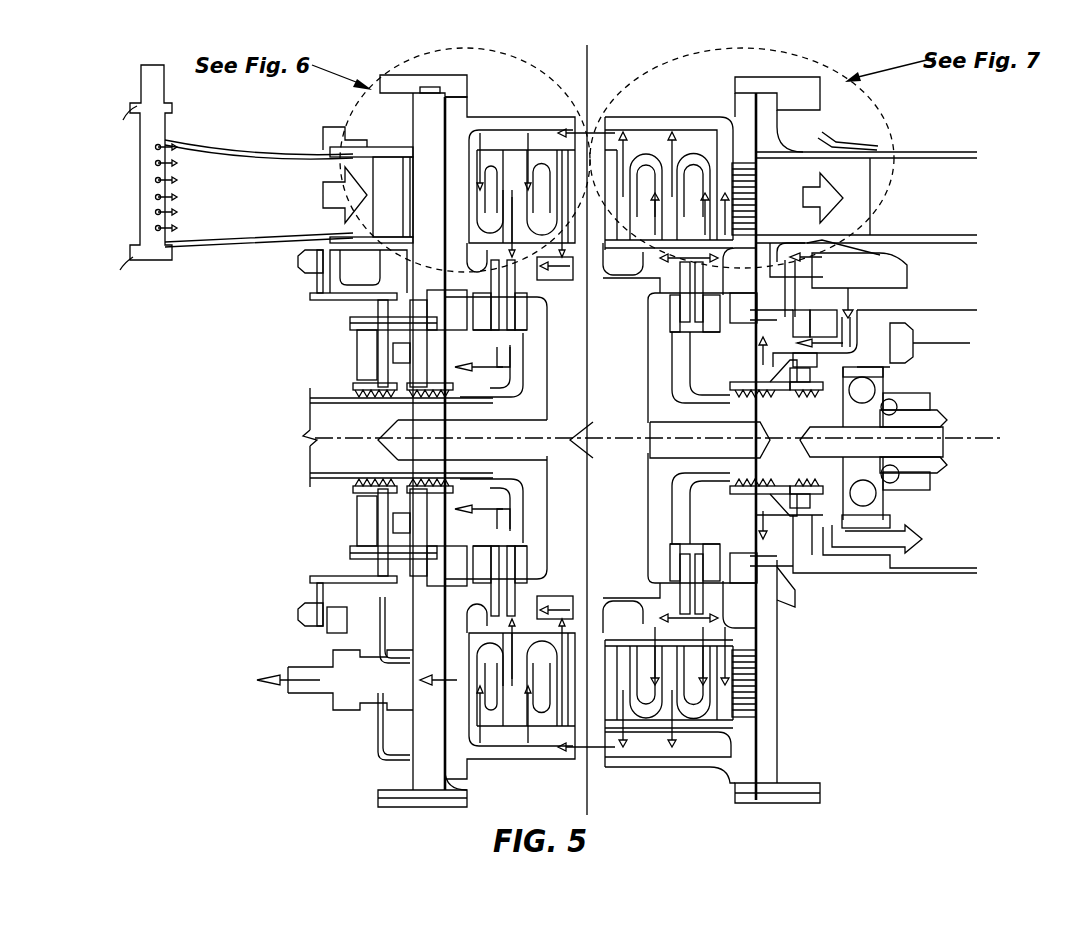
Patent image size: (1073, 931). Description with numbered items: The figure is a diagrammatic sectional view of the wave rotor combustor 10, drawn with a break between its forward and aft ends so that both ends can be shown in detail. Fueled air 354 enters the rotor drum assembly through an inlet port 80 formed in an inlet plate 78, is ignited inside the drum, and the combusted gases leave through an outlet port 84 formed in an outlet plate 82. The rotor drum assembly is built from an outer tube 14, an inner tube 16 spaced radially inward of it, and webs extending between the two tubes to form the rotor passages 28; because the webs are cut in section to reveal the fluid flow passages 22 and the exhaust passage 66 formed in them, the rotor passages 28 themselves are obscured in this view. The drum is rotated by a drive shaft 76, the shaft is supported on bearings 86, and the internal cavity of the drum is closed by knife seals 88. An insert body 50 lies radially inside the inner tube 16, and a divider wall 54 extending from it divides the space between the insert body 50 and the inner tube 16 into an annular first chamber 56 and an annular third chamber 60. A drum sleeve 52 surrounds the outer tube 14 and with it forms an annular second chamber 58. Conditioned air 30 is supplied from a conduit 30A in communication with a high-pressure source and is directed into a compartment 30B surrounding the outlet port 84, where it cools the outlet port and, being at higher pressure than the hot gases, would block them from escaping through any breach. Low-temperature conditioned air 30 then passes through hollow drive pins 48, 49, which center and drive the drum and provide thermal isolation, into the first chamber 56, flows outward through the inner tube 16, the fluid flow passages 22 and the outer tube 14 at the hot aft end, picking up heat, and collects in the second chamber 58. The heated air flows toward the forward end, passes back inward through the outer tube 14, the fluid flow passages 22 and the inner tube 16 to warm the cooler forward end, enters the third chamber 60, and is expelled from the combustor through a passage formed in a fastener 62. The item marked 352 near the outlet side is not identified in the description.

The wave rotor combustor 10 is at (834, 58).
The outer tube 14 is at (707, 147).
The inner tube 16 is at (483, 243).
The fluid flow passages 22 is at (563, 152).
The rotor passages 28 is at (389, 74).
The conditioned air 30 is at (900, 283).
The conduit 30A is at (312, 693).
The compartment 30B is at (959, 268).
The hollow drive pin 48 is at (510, 298).
The hollow drive pin 49 is at (680, 307).
The insert body 50 is at (618, 232).
The drum sleeve 52 is at (503, 116).
The divider wall 54 is at (625, 262).
The first chamber 56 is at (644, 270).
The second chamber 58 is at (646, 132).
The third chamber 60 is at (536, 271).
The fastener 62 is at (357, 313).
The exhaust passage 66 is at (735, 165).
The drive shaft 76 is at (830, 414).
The inlet plate 78 is at (441, 86).
The inlet port 80 is at (415, 183).
The outlet plate 82 is at (789, 117).
The outlet port 84 is at (800, 218).
The bearings 86 is at (878, 507).
The seals 88 is at (452, 488).
The exhaust 352 is at (805, 187).
The fueled air 354 is at (200, 185).